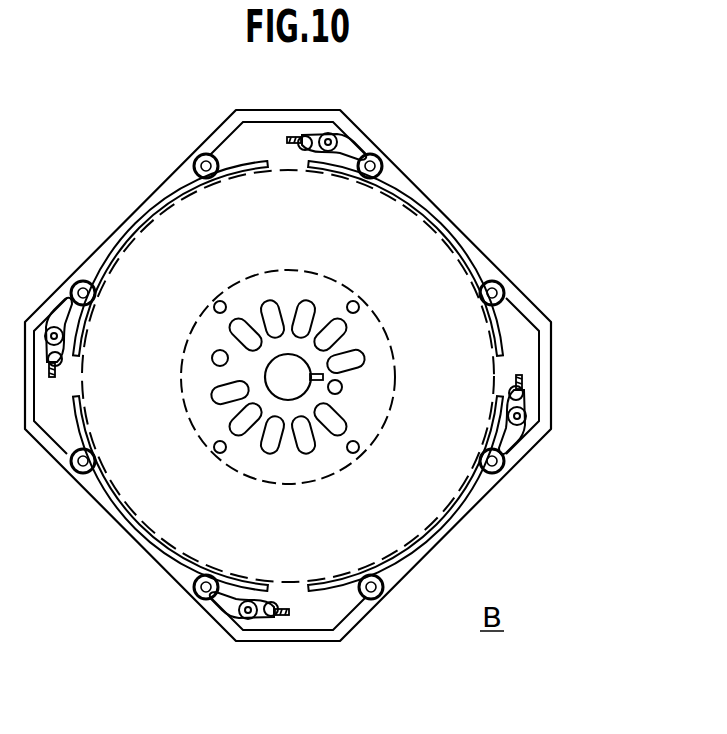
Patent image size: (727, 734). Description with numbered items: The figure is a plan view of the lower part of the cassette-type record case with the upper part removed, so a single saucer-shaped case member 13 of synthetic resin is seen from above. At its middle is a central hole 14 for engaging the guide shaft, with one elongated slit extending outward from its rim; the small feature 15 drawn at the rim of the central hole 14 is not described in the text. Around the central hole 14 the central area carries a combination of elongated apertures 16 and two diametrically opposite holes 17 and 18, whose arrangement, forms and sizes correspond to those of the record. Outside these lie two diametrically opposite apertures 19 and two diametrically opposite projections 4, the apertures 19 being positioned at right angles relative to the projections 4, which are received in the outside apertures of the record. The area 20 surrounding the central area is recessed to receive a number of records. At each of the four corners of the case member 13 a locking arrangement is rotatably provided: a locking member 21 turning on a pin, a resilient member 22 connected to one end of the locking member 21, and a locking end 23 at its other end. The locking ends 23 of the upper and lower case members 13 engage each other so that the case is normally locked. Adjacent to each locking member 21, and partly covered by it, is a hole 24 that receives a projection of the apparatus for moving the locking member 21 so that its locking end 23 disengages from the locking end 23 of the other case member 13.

The projections 4 is at (220, 307).
The case member 13 is at (423, 193).
The central hole 14 is at (278, 360).
The key 15 is at (323, 377).
The elongated apertures 16 is at (345, 424).
The hole 17 is at (220, 358).
The hole 18 is at (335, 387).
The apertures 19 is at (353, 307).
The recessed area 20 is at (402, 512).
The locking member 21 is at (323, 135).
The resilient member 22 is at (502, 442).
The locking end 23 is at (288, 137).
The hole 24 is at (307, 135).